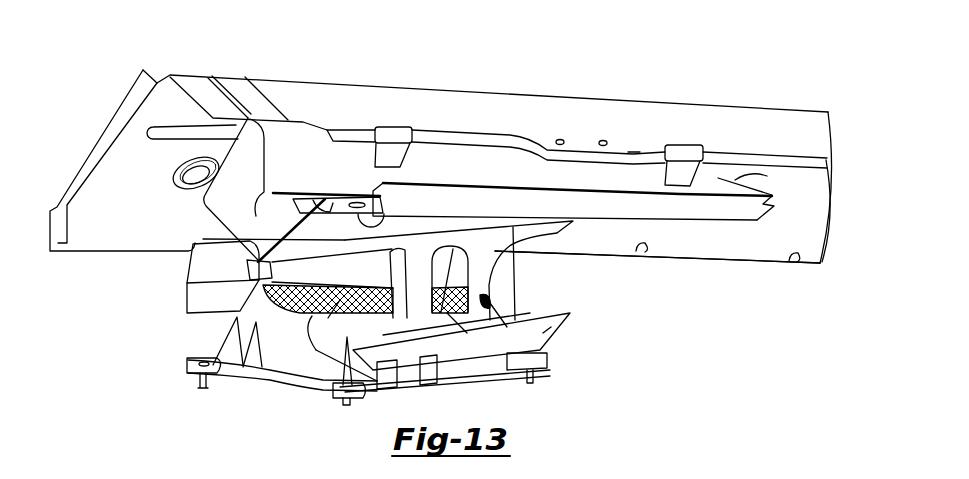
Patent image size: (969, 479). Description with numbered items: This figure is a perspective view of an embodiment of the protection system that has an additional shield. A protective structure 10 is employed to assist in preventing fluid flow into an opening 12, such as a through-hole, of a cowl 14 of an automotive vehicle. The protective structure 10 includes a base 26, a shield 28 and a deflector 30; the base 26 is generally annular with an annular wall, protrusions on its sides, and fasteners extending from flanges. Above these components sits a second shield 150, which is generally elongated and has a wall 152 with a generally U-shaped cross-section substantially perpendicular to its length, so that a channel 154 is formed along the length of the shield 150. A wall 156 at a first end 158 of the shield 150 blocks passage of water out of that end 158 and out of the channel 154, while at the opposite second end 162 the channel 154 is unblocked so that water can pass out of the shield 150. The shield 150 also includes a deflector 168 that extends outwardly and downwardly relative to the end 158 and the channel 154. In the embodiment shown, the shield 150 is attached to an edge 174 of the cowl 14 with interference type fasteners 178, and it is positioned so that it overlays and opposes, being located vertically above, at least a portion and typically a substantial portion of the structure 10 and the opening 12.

The protective structure 10 is at (287, 366).
The opening 12 is at (315, 318).
The cowl 14 is at (298, 95).
The base 26 is at (318, 362).
The shield 28 is at (553, 228).
The deflector 30 is at (548, 334).
The shield 150 is at (727, 236).
The wall 152 is at (625, 207).
The channel 154 is at (460, 158).
The wall 156 is at (770, 168).
The first end 158 is at (790, 194).
The second end 162 is at (196, 212).
The deflector 168 is at (258, 195).
The edge 174 is at (634, 147).
The fasteners 178 is at (393, 130).